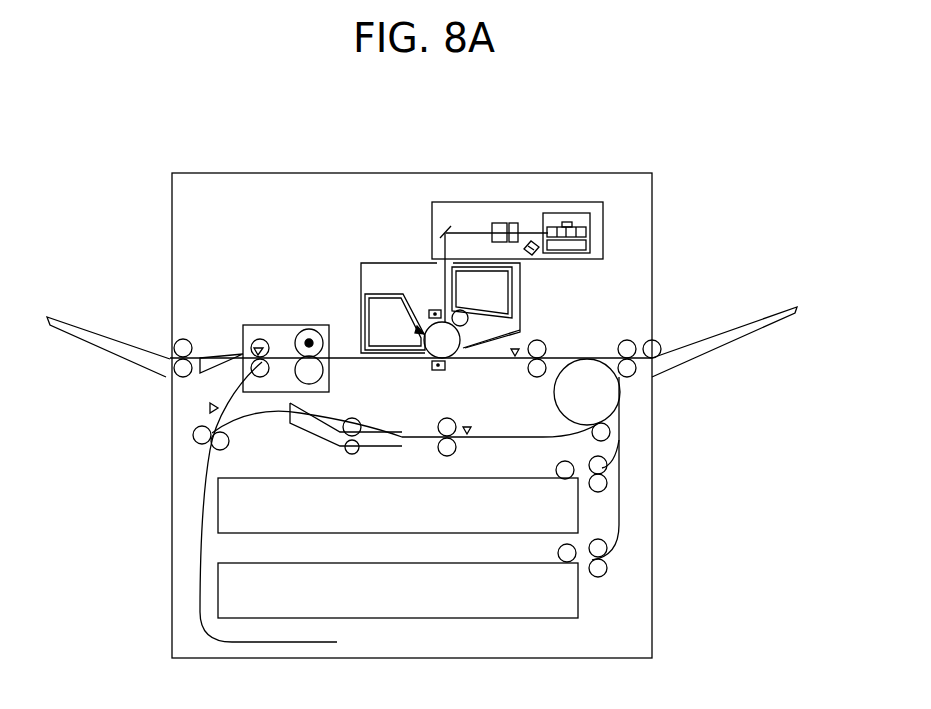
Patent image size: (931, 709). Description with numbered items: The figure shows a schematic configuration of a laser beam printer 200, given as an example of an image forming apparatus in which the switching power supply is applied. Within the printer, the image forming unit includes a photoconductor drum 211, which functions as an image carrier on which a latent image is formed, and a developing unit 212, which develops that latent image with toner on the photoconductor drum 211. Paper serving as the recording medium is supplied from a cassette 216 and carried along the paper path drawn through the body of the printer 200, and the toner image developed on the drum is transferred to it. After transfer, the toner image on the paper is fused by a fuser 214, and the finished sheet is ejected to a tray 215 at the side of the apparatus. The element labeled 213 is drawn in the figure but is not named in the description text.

The laser beam printer 200 is at (507, 172).
The photoconductor drum 211 is at (403, 263).
The developing unit 212 is at (461, 317).
The photosensitive drum 213 is at (450, 342).
The fuser 214 is at (303, 325).
The tray 215 is at (107, 340).
The cassette 216 is at (568, 517).